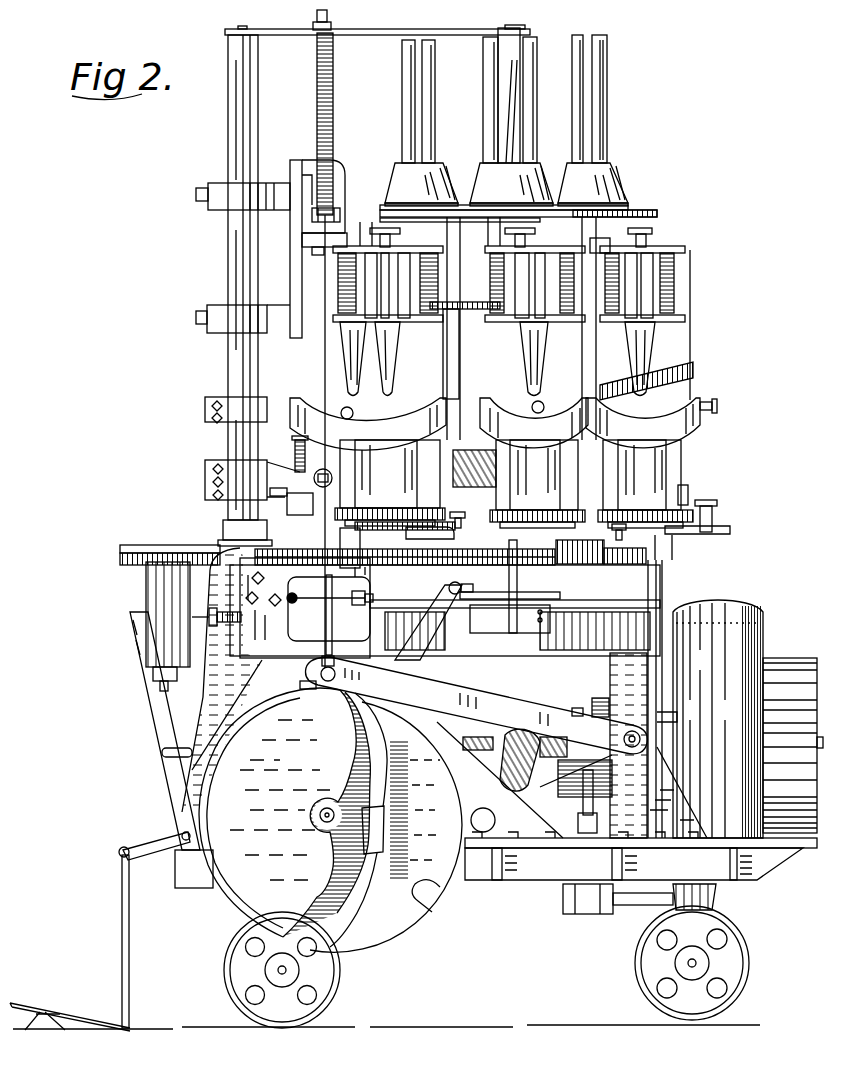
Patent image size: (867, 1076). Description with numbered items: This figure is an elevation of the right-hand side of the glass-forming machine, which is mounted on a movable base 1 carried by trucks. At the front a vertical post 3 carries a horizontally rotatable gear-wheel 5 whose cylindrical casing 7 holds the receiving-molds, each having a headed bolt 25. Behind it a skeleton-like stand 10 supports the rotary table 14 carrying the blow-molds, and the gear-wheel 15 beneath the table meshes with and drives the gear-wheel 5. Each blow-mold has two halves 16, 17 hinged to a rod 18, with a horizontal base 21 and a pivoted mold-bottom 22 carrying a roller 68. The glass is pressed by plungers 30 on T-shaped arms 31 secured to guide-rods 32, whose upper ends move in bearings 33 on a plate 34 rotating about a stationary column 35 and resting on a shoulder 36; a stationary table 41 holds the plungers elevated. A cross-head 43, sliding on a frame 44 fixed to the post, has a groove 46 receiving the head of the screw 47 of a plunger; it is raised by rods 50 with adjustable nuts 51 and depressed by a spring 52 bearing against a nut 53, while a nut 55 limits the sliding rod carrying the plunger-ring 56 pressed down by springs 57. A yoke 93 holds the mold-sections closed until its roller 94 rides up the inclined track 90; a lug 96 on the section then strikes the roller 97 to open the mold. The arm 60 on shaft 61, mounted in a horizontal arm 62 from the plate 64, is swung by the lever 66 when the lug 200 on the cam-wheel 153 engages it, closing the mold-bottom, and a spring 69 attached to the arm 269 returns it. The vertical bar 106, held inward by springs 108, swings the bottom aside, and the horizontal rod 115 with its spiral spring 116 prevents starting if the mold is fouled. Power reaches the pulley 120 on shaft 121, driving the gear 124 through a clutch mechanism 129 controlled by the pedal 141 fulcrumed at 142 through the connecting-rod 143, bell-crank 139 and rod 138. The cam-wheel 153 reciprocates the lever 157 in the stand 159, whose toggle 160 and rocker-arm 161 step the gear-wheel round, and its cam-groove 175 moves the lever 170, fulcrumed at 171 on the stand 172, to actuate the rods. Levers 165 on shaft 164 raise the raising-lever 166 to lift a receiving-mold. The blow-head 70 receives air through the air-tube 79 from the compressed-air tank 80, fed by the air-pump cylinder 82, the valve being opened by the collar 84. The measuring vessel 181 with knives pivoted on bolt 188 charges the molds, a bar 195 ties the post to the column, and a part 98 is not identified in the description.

The movable base 1 is at (776, 864).
The vertical post 3 is at (252, 90).
The gear-wheel 5 is at (122, 557).
The cylindrical casing 7 is at (147, 588).
The stand 10 is at (445, 610).
The rotary table 14 is at (515, 475).
The gear-wheel 15 is at (646, 557).
The mold-section 16 is at (390, 474).
The mold-section 17 is at (663, 462).
The rod 18 is at (341, 481).
The horizontal base 21 is at (760, 552).
The mold-bottom 22 is at (403, 512).
The headed bolt 25 is at (167, 686).
The plunger 30 is at (540, 353).
The arm 31 is at (681, 262).
The guide-rod 32 is at (488, 78).
The bearing 33 is at (441, 178).
The plate 34 is at (657, 213).
The stationary column 35 is at (516, 110).
The shoulder 36 is at (496, 220).
The stationary table 41 is at (450, 305).
The cross-head 43 is at (343, 177).
The frame 44 is at (292, 262).
The groove 46 is at (313, 238).
The screw 47 is at (655, 232).
The rod 50 is at (325, 358).
The adjustable nut 51 is at (333, 230).
The spring 52 is at (333, 83).
The nut 53 is at (328, 27).
The nut 55 is at (672, 245).
The plunger-ring 56 is at (673, 320).
The spring 57 is at (670, 282).
The arm 60 is at (398, 534).
The shaft 61 is at (360, 585).
The horizontal arm 62 is at (334, 542).
The plate 64 is at (313, 672).
The lever 66 is at (337, 671).
The roller 68 is at (458, 516).
The spring 69 is at (293, 593).
The blow-head 70 is at (628, 745).
The air-tube 79 is at (636, 909).
The compressed-air tank 80 is at (758, 605).
The air-pump cylinder 82 is at (563, 899).
The collar 84 is at (207, 473).
The track 90 is at (696, 370).
The yoke 93 is at (495, 424).
The roller 94 is at (717, 412).
The lug 96 is at (688, 490).
The roller 97 is at (718, 523).
The bar 98 is at (696, 567).
The vertical bar 106 is at (516, 650).
The spring 108 is at (556, 587).
The horizontal rod 115 is at (201, 610).
The spiral spring 116 is at (210, 626).
The pulley 120 is at (793, 658).
The shaft 121 is at (815, 727).
The gear 124 is at (596, 697).
The clutch mechanism 129 is at (572, 710).
The rod 138 is at (177, 767).
The bell-crank 139 is at (157, 710).
The pedal 141 is at (28, 1000).
The fulcrum 142 is at (53, 1031).
The connecting-rod 143 is at (123, 929).
The cam-wheel 153 is at (393, 922).
The lever 157 is at (433, 673).
The stand 159 is at (540, 805).
The toggle 160 is at (460, 585).
The rocker-arm 161 is at (606, 587).
The shaft 164 is at (495, 818).
The lever 165 is at (457, 807).
The raising-lever 166 is at (585, 791).
The lever 170 is at (477, 705).
The fulcrum 171 is at (630, 750).
The stand 172 is at (572, 780).
The cam-groove 175 is at (335, 948).
The measuring vessel 181 is at (270, 520).
The bolt 188 is at (297, 448).
The bar 195 is at (462, 29).
The lug 200 is at (300, 686).
The arm 269 is at (333, 610).